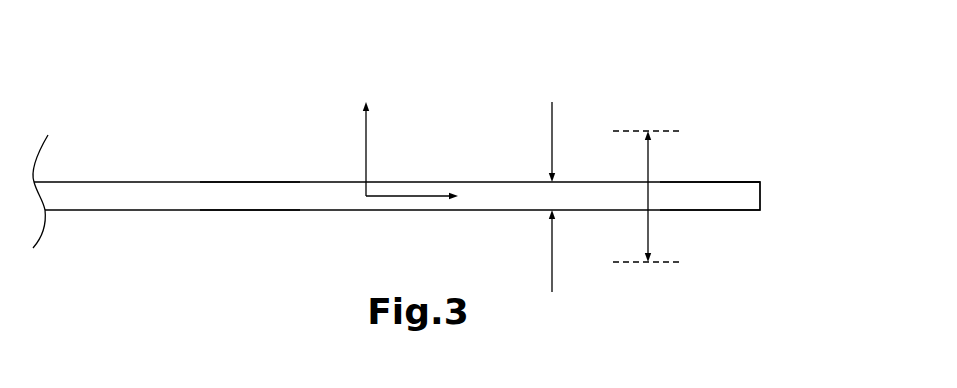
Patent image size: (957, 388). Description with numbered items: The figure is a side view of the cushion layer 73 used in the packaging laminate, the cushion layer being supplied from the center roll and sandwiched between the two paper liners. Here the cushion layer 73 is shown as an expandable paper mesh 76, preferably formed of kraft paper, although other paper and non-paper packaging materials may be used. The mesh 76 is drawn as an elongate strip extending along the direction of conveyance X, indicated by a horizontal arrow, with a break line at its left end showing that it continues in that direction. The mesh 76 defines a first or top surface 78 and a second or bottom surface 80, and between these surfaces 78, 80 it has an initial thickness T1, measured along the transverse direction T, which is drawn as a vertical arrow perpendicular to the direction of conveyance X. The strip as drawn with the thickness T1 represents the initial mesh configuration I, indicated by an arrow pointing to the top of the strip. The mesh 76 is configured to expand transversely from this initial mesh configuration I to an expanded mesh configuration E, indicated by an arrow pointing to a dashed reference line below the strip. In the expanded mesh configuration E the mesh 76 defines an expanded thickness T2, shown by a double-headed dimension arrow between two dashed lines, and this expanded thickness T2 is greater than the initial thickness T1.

The cushion layer 73 is at (720, 115).
The expandable paper mesh 76 is at (680, 195).
The top surface 78 is at (240, 181).
The bottom surface 80 is at (227, 211).
The initial mesh configuration I is at (722, 178).
The expanded mesh configuration E is at (663, 268).
The transverse direction T is at (366, 136).
The direction of conveyance X is at (422, 197).
The initial thickness T1 is at (551, 184).
The expanded thickness T2 is at (646, 182).